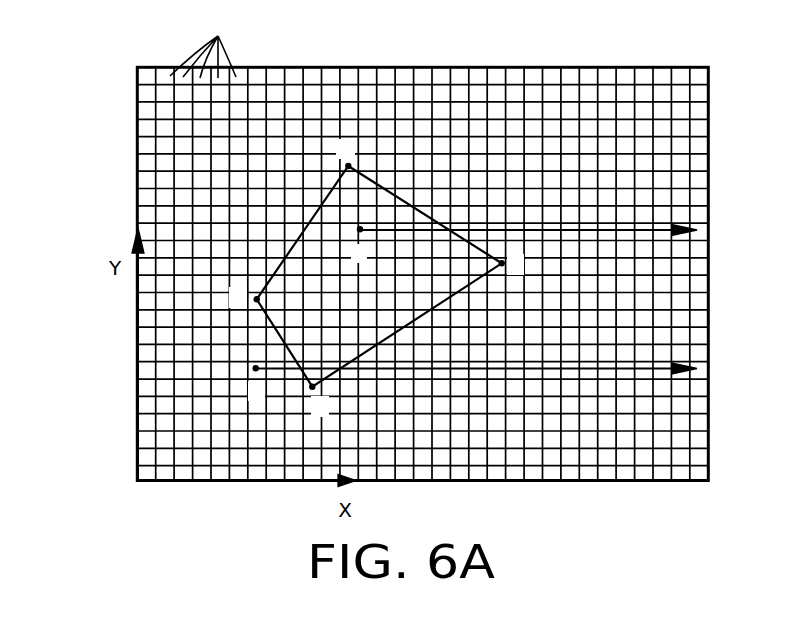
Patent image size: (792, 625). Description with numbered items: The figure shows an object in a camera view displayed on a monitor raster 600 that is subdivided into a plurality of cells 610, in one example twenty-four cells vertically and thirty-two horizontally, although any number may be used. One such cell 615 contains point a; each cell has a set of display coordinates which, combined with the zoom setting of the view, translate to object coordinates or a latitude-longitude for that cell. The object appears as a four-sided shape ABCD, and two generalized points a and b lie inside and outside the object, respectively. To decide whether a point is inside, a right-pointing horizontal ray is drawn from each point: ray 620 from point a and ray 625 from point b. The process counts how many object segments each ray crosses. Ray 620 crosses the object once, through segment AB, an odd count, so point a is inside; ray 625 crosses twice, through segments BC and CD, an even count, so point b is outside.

The raster 600 is at (527, 66).
The cells 610 is at (203, 45).
The cell 615 is at (360, 229).
The ray 620 is at (657, 223).
The ray 625 is at (658, 374).